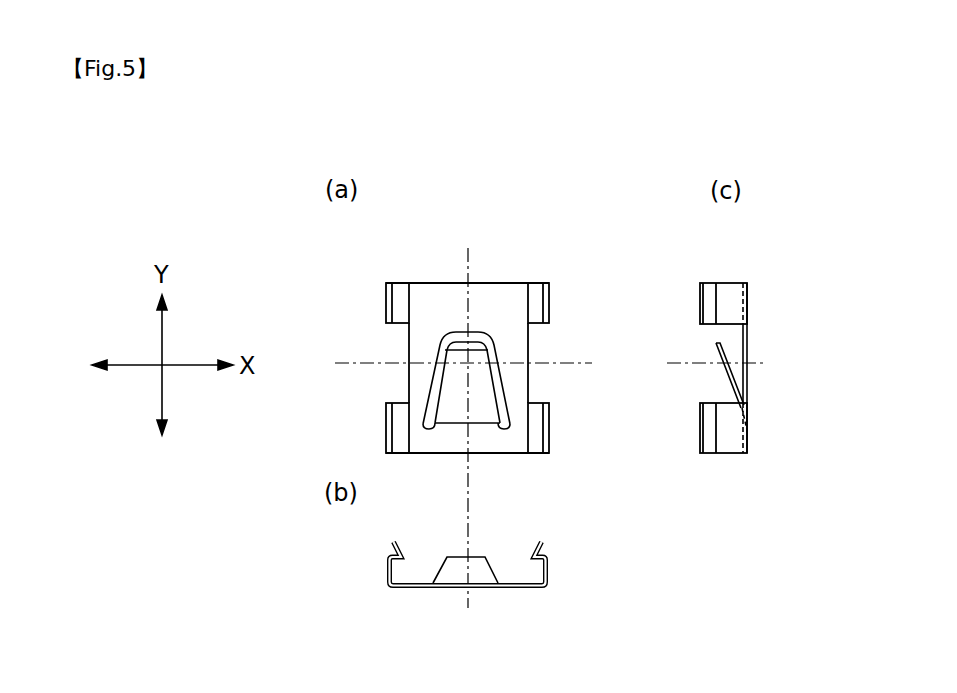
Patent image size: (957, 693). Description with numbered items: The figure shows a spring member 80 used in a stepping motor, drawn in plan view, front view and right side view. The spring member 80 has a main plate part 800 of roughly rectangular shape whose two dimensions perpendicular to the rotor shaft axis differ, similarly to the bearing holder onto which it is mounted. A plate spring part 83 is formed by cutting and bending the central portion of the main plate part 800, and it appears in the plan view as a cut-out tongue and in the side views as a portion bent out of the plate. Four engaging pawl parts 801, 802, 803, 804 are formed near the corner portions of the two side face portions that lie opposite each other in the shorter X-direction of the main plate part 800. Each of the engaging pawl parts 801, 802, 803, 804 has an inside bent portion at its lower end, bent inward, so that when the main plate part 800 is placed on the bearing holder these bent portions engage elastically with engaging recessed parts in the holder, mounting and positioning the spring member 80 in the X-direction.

The spring member 80 is at (437, 268).
The main plate part 800 is at (500, 294).
The engaging pawl part 801 is at (548, 300).
The engaging pawl part 802 is at (548, 425).
The engaging pawl part 803 is at (387, 423).
The engaging pawl part 804 is at (387, 304).
The plate spring part 83 is at (480, 377).